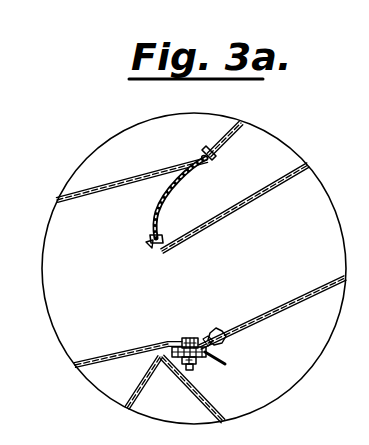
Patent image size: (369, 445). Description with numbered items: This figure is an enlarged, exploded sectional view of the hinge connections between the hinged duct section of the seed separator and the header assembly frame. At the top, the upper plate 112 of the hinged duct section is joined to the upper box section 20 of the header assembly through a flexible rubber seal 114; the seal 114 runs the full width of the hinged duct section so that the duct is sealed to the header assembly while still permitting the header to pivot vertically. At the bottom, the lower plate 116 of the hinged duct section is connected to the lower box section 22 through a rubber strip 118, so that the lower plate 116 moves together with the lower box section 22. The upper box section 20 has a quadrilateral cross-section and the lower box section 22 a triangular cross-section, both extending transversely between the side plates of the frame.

The upper box section 20 is at (133, 179).
The lower box section 22 is at (110, 356).
The upper plate 112 is at (233, 214).
The flexible rubber seal 114 is at (172, 205).
The lower plate 116 is at (267, 320).
The rubber strip 118 is at (173, 341).